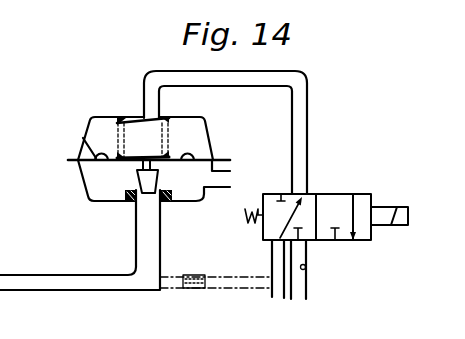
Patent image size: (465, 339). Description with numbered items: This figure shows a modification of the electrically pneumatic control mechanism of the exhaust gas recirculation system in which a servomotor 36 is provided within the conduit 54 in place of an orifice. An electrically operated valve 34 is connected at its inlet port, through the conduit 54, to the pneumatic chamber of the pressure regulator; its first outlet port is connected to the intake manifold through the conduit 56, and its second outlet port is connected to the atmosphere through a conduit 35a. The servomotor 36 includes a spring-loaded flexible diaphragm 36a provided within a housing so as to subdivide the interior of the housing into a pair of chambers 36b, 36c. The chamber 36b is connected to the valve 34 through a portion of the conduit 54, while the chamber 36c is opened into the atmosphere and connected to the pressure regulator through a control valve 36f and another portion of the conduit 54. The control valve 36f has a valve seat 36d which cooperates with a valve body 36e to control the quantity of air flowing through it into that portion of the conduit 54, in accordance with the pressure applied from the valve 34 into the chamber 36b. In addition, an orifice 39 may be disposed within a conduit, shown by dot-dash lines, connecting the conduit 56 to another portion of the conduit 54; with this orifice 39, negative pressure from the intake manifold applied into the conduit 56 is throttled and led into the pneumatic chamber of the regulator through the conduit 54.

The electrically operated valve 34 is at (327, 186).
The conduit 35a is at (306, 270).
The servomotor 36 is at (222, 115).
The spring-loaded flexible diaphragm 36a is at (85, 142).
The chamber 36b is at (205, 148).
The chamber 36c is at (86, 176).
The valve seat 36d is at (171, 200).
The valve body 36e is at (125, 194).
The control valve 36f is at (128, 208).
The orifice 39 is at (193, 290).
The conduit 54 is at (112, 290).
The conduit 56 is at (283, 291).